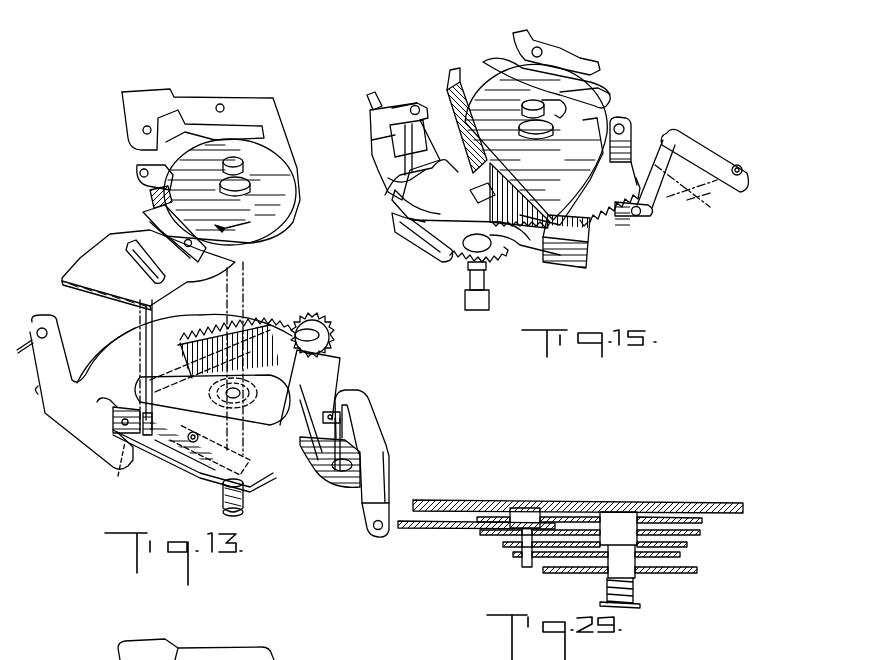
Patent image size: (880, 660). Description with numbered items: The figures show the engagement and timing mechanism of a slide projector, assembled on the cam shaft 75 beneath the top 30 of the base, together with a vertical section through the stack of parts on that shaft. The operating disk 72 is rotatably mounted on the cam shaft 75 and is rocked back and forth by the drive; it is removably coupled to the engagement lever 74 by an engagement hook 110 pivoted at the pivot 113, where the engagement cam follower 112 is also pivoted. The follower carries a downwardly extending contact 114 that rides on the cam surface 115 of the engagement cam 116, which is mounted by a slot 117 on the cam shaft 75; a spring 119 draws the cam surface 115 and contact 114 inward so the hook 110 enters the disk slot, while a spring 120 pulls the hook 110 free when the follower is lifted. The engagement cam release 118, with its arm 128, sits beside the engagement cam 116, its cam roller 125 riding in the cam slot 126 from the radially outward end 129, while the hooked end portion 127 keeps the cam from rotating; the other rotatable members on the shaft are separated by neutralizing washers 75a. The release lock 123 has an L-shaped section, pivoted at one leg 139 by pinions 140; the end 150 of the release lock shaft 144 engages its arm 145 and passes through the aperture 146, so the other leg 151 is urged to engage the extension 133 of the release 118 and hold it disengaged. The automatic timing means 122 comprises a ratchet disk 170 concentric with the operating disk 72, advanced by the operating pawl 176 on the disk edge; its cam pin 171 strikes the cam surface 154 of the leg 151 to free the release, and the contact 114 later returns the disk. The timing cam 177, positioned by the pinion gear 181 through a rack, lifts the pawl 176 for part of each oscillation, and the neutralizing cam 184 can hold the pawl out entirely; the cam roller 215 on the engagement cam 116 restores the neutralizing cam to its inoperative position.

In FIG. 13, the operating disk 72 is at (268, 188).
In FIG. 15, the operating disk 72 is at (592, 132).
In FIG. 29, the operating disk 72 is at (670, 577).
In FIG. 13, the cam shaft 75 is at (232, 300).
In FIG. 15, the cam shaft 75 is at (593, 126).
In FIG. 29, the cam shaft 75 is at (658, 503).
In FIG. 13, the engagement hook 110 is at (160, 193).
In FIG. 15, the engagement hook 110 is at (598, 82).
In FIG. 13, the engagement cam follower 112 is at (152, 211).
In FIG. 15, the engagement cam follower 112 is at (563, 47).
In FIG. 13, the pivot 113 is at (197, 250).
In FIG. 13, the engagement lever 74 is at (88, 262).
In FIG. 29, the engagement lever 74 is at (680, 560).
In FIG. 13, the spring 119 is at (150, 270).
In FIG. 13, the spring 120 is at (183, 280).
In FIG. 13, the contact 114 is at (138, 323).
In FIG. 13, the automatic timing means 122 is at (278, 314).
In FIG. 13, the ratchet disk 170 is at (277, 323).
In FIG. 15, the ratchet disk 170 is at (623, 140).
In FIG. 29, the ratchet disk 170 is at (687, 552).
In FIG. 13, the slot 117 is at (247, 380).
In FIG. 13, the cam pin 171 is at (330, 352).
In FIG. 13, the cam slot 126 is at (267, 453).
In FIG. 13, the release lock 123 is at (340, 488).
In FIG. 15, the release lock 123 is at (357, 128).
In FIG. 13, the cam roller 125 is at (208, 458).
In FIG. 13, the radially outward end 129 is at (186, 433).
In FIG. 13, the cam surface 115 is at (175, 447).
In FIG. 13, the engagement cam 116 is at (195, 455).
In FIG. 29, the engagement cam 116 is at (687, 542).
In FIG. 13, the hooked end portion 127 is at (130, 433).
In FIG. 13, the cam roller 215 is at (129, 453).
In FIG. 13, the engagement cam release 118 is at (226, 503).
In FIG. 29, the engagement cam release 118 is at (688, 531).
In FIG. 13, the arm 128 is at (243, 513).
In FIG. 15, the leg 151 is at (455, 115).
In FIG. 15, the pinions 140 is at (398, 156).
In FIG. 15, the end 150 is at (417, 105).
In FIG. 15, the arm 145 is at (395, 108).
In FIG. 15, the leg 139 is at (383, 147).
In FIG. 15, the release lock shaft 144 is at (433, 167).
In FIG. 15, the aperture 146 is at (410, 195).
In FIG. 15, the cam surface 154 is at (470, 193).
In FIG. 15, the extension 133 is at (483, 198).
In FIG. 15, the neutralizing cam 184 is at (720, 153).
In FIG. 29, the neutralizing cam 184 is at (453, 530).
In FIG. 15, the operating pawl 176 is at (580, 270).
In FIG. 15, the pinion gear 181 is at (498, 268).
In FIG. 29, the timing cam 177 is at (717, 502).
In FIG. 29, the top 30 is at (635, 503).
In FIG. 29, the neutralizing washers 75a is at (517, 557).